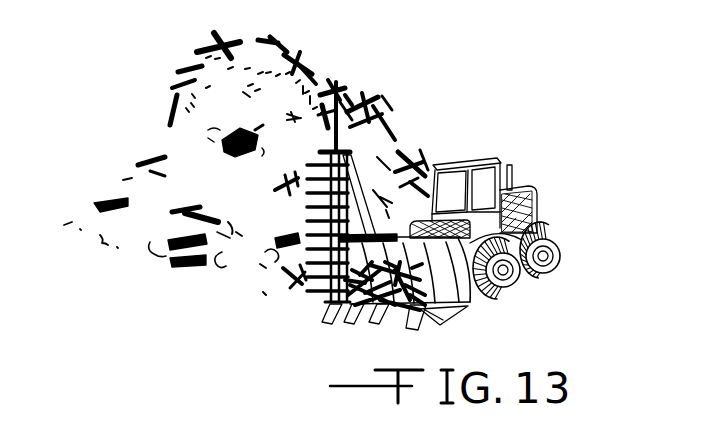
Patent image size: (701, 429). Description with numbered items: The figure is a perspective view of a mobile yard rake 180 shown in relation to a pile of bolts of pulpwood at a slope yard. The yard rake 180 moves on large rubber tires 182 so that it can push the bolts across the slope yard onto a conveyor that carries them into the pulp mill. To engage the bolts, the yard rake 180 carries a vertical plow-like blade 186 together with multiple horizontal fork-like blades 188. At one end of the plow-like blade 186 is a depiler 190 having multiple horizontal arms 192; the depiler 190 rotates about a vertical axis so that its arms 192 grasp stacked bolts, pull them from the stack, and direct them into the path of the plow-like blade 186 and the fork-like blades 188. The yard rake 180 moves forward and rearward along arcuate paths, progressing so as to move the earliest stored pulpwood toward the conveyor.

The mobile yard rake 180 is at (522, 182).
The large rubber tires 182 is at (553, 233).
The vertical plow-like blade 186 is at (464, 309).
The horizontal fork-like blades 188 is at (326, 313).
The depiler 190 is at (338, 88).
The horizontal arms 192 is at (318, 168).